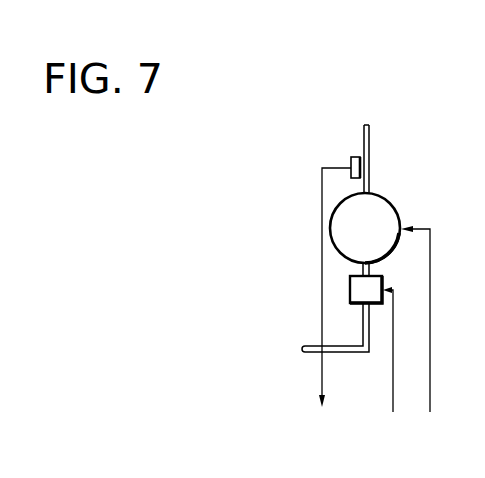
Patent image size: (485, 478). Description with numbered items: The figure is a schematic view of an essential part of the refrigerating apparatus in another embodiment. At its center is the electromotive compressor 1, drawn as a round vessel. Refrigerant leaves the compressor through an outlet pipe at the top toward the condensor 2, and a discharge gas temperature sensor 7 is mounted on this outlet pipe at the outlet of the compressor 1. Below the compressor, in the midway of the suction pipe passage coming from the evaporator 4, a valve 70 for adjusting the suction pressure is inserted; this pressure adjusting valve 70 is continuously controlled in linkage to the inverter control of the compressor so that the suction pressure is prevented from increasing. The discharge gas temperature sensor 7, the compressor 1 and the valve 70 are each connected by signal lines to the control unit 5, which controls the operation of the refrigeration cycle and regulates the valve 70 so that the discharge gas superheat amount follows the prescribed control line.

The electromotive compressor 1 is at (392, 205).
The condensor 2 is at (366, 115).
The evaporator 4 is at (298, 350).
The control unit 5 is at (377, 307).
The discharge gas temperature sensor 7 is at (356, 156).
The valve for adjusting the suction pressure 70 is at (350, 289).